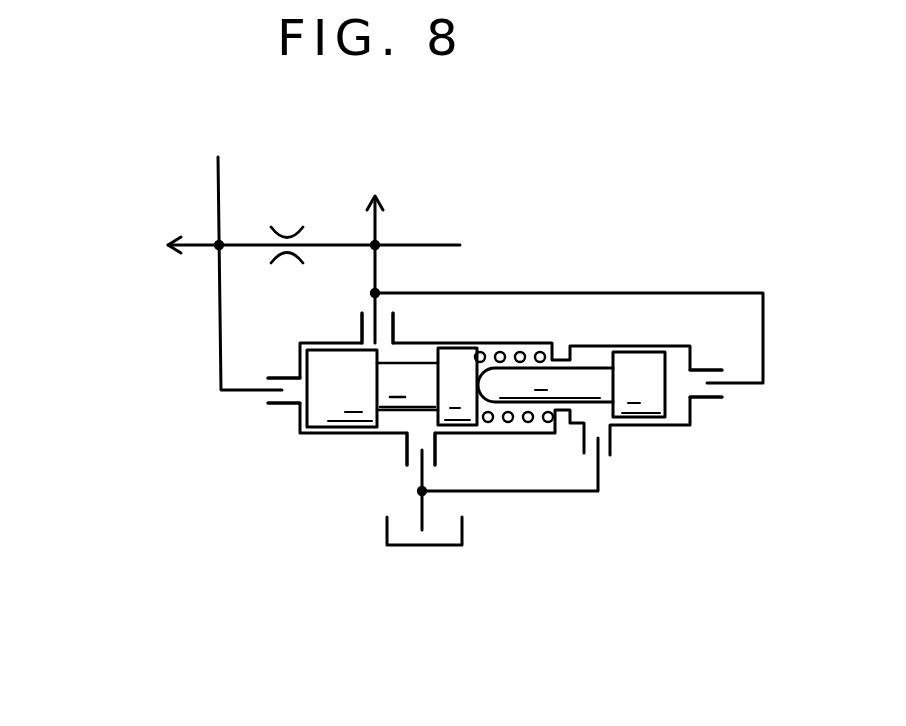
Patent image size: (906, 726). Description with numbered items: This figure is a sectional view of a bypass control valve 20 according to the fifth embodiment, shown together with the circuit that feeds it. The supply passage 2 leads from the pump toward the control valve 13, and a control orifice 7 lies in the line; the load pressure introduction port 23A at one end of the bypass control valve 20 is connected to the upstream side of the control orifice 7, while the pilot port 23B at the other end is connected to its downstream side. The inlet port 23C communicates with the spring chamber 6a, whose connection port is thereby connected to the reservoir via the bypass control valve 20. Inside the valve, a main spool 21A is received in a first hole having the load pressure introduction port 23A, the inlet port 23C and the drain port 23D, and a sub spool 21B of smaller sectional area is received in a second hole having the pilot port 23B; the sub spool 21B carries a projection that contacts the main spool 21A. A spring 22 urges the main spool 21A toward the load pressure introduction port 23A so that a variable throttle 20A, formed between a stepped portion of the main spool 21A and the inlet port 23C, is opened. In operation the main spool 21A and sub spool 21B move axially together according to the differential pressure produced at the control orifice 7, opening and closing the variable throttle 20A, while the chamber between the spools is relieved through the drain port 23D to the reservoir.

The supply passage 2 is at (197, 243).
The control valve 13 is at (288, 247).
The control orifice 7 is at (284, 228).
The spring chamber 6a is at (368, 250).
The bypass control valve 20 is at (355, 456).
The variable throttle 20A is at (398, 328).
The main spool 21A is at (332, 413).
The sub spool 21B is at (638, 410).
The spring 22 is at (503, 350).
The load pressure introduction port 23A is at (287, 403).
The pilot port 23B is at (713, 390).
The inlet port 23C is at (368, 322).
The drain port 23D is at (410, 460).